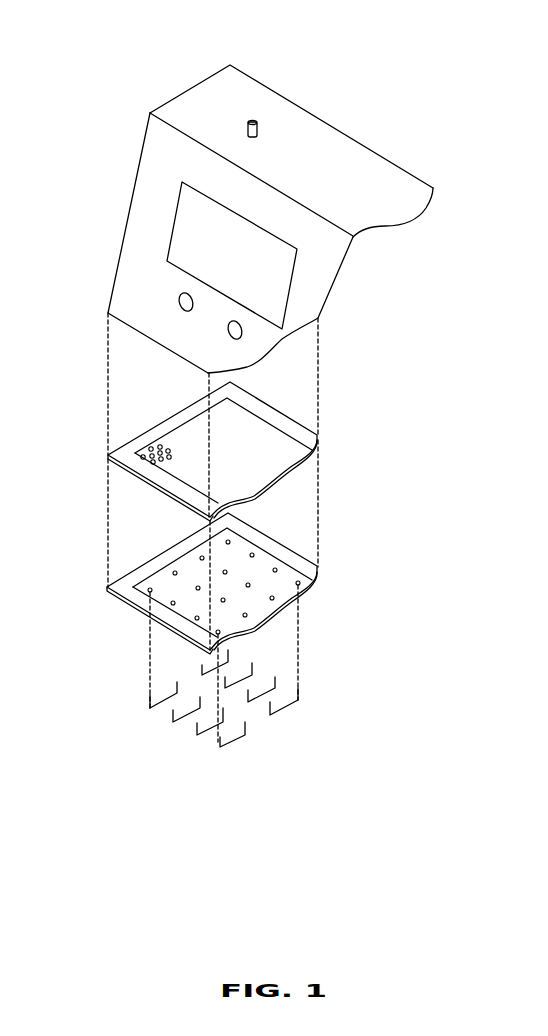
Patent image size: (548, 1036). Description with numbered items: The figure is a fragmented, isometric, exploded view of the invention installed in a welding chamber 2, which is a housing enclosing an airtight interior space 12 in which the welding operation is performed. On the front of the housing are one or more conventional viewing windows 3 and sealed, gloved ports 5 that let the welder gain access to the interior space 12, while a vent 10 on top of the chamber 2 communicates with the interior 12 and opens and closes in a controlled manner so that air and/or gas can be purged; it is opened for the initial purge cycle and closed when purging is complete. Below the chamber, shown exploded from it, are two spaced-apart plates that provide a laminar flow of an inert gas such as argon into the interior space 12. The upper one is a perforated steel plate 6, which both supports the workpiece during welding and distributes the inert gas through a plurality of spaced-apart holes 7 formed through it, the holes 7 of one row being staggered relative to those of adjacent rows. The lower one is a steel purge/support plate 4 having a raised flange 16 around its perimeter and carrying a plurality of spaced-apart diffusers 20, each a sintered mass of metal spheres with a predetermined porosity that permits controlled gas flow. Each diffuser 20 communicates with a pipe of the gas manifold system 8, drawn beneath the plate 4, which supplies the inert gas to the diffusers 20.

The welding chamber 2 is at (394, 143).
The viewing window 3 is at (200, 242).
The purge/support plate 4 is at (251, 561).
The gloved port 5 is at (226, 332).
The perforated steel plate 6 is at (293, 428).
The holes 7 is at (148, 448).
The gas manifold system 8 is at (237, 736).
The vent 10 is at (254, 121).
The airtight interior space 12 is at (280, 373).
The raised flange 16 is at (268, 543).
The diffusers 20 is at (175, 571).